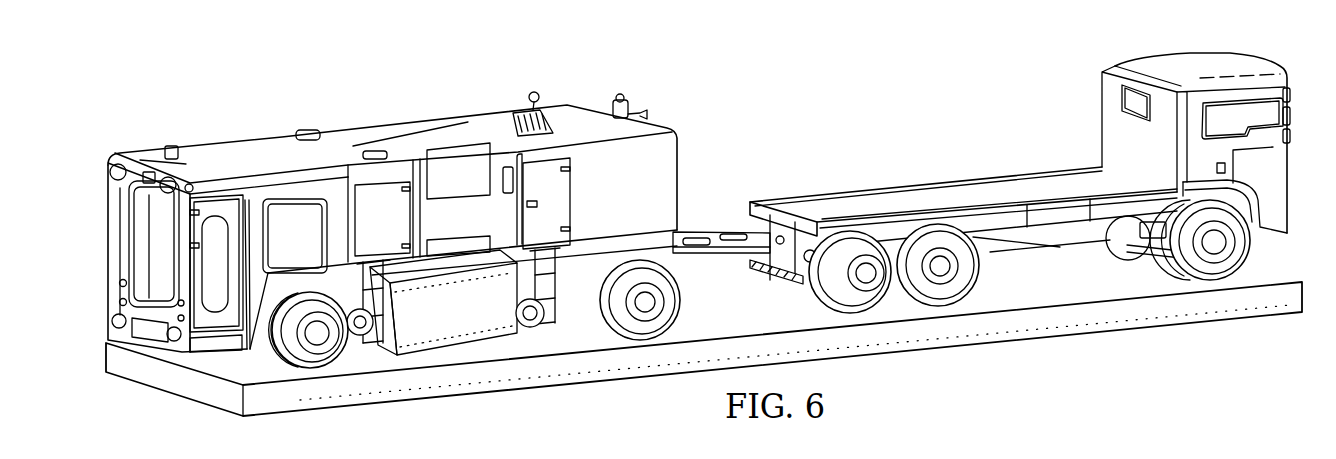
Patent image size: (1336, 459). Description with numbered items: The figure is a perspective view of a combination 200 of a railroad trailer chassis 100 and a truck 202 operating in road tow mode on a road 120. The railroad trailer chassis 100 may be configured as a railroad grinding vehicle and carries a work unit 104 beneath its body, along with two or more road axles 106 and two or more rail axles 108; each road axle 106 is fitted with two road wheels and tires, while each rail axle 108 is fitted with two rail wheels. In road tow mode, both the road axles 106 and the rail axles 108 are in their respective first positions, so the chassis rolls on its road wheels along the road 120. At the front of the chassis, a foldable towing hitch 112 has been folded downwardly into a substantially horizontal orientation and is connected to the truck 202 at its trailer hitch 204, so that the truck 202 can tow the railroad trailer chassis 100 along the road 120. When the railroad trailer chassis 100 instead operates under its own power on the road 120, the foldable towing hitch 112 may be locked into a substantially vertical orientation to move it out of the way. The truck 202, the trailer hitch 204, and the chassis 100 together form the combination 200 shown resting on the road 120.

The railroad trailer chassis 100 is at (446, 261).
The work unit 104 is at (445, 352).
The road axles 106 is at (340, 365).
The rail axles 108 is at (353, 350).
The foldable towing hitch 112 is at (699, 233).
The road 120 is at (1005, 337).
The combination 200 is at (348, 81).
The truck 202 is at (1017, 183).
The trailer hitch 204 is at (780, 235).